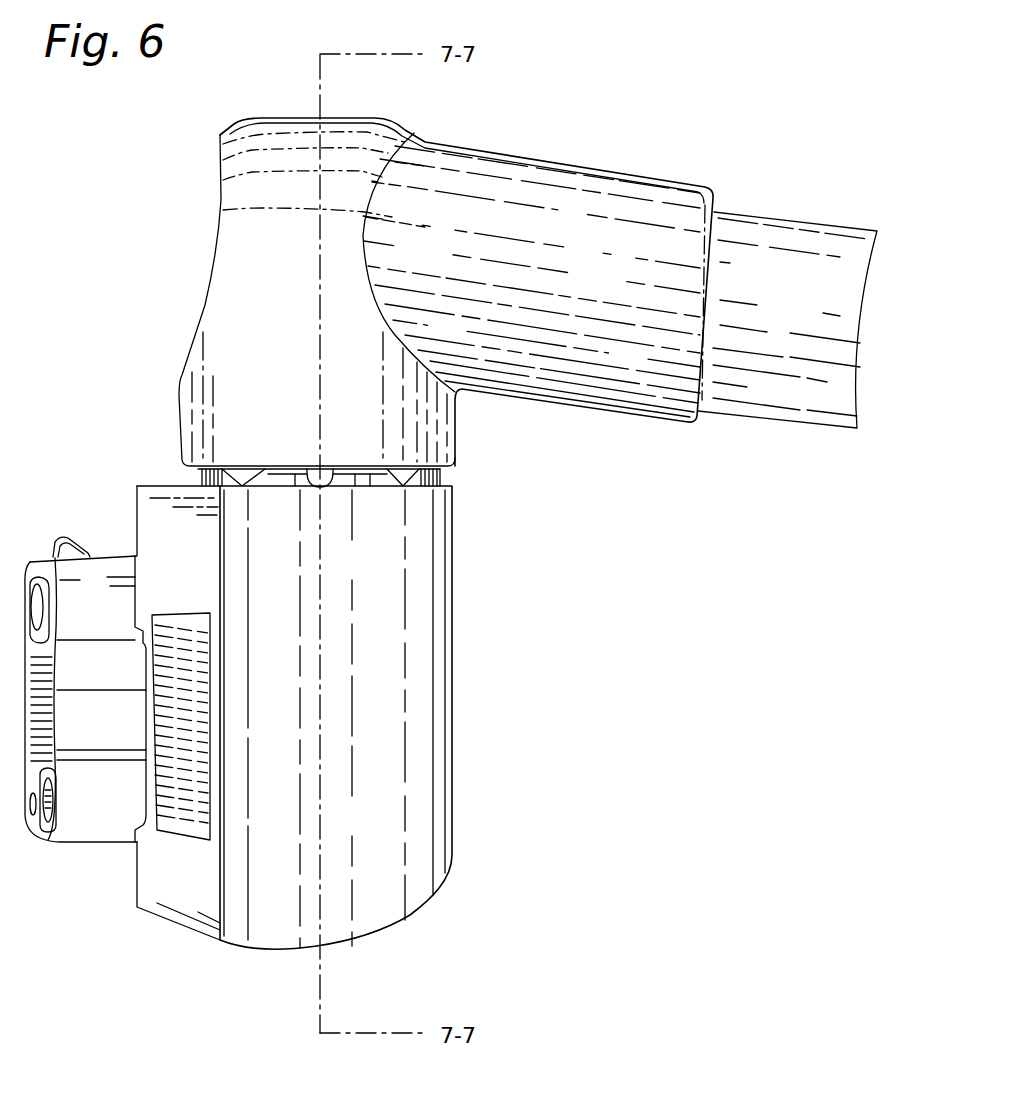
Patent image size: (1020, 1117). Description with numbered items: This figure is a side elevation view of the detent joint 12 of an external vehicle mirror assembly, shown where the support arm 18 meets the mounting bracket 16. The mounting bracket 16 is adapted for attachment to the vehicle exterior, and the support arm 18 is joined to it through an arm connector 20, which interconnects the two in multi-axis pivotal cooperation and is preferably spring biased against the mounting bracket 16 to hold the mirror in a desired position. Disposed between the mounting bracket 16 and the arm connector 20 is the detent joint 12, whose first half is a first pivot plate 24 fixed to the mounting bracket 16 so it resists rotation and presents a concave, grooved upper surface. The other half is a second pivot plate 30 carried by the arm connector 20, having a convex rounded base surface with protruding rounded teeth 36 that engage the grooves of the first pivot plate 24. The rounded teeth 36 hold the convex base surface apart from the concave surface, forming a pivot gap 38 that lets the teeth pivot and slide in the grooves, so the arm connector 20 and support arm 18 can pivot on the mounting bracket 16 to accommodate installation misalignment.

The detent joint 12 is at (176, 473).
The lower mounting bracket 16 is at (436, 726).
The support arm 18 is at (772, 228).
The arm connector 20 is at (528, 166).
The first pivot plate 24 is at (436, 485).
The second pivot plate 30 is at (242, 468).
The rounded teeth 36 is at (323, 470).
The pivot gap 38 is at (462, 473).